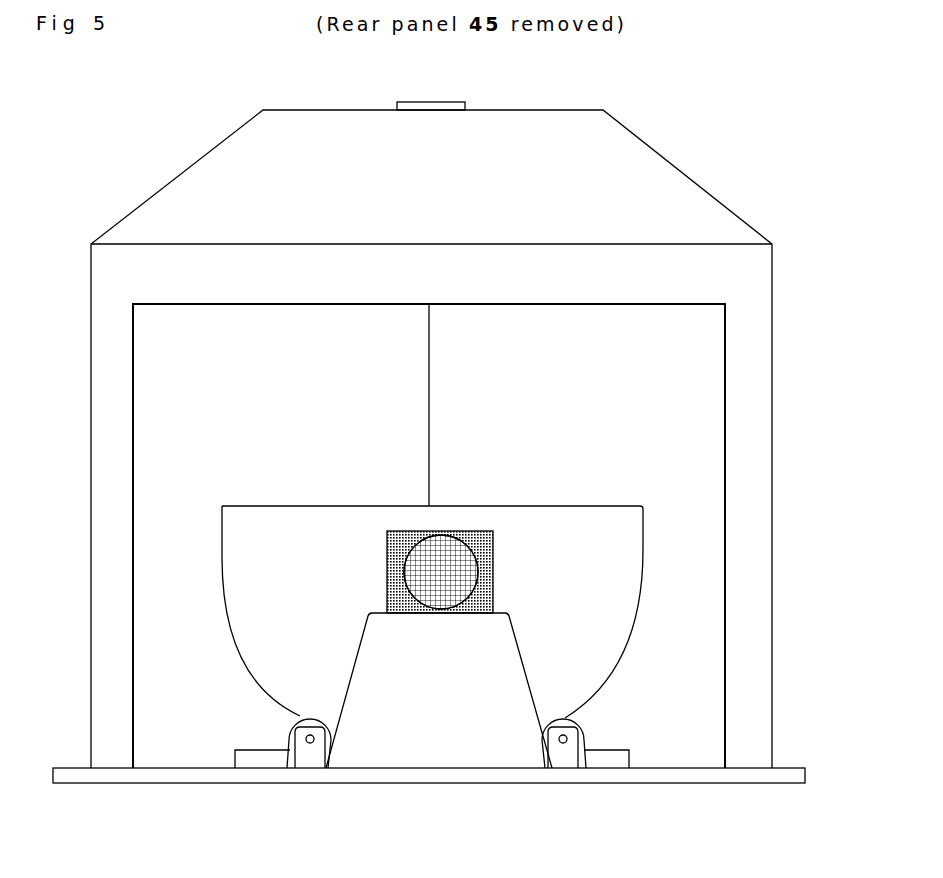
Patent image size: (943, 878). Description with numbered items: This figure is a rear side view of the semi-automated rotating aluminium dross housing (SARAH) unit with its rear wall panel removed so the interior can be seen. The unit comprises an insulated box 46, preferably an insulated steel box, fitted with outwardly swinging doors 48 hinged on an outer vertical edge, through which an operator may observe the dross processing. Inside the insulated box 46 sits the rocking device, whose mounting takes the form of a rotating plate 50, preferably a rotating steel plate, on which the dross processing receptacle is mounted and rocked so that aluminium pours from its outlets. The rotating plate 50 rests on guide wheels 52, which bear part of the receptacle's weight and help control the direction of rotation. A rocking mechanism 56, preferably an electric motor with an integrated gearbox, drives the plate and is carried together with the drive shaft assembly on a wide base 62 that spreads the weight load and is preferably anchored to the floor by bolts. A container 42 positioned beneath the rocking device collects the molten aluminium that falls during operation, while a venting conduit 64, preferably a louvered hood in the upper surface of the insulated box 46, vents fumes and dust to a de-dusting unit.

The container 42 is at (260, 755).
The insulated box 46 is at (196, 147).
The outwardly swinging doors 48 is at (708, 398).
The rotating plate 50 is at (625, 538).
The guide wheels 52 is at (563, 755).
The rocking mechanism 56 is at (482, 578).
The wide base 62 is at (418, 735).
The venting conduit 64 is at (468, 101).